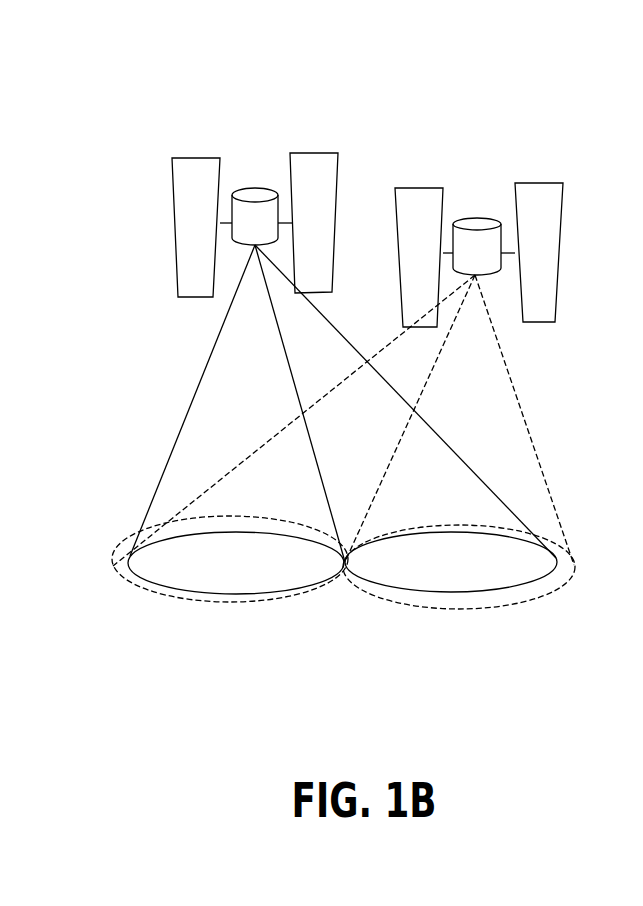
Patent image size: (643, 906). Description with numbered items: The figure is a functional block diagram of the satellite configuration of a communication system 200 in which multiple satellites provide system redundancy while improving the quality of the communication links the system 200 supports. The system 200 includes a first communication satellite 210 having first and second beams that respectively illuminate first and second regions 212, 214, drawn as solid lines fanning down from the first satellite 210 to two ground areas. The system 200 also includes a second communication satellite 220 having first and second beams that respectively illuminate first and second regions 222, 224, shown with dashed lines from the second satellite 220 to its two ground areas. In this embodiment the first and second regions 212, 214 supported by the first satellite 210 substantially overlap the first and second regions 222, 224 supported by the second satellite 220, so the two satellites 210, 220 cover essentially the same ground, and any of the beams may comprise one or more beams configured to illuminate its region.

The communication system 200 is at (531, 69).
The first communication satellite 210 is at (272, 180).
The second communication satellite 220 is at (495, 215).
The first region 212 is at (332, 568).
The second region 214 is at (432, 588).
The first region 222 is at (117, 557).
The second region 224 is at (542, 585).